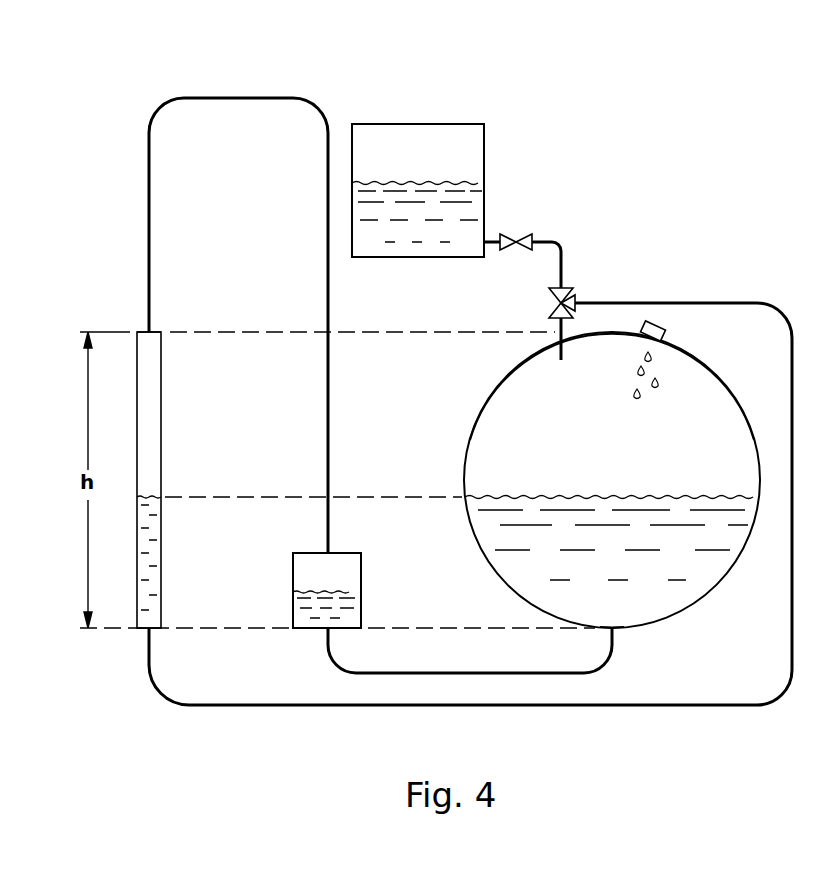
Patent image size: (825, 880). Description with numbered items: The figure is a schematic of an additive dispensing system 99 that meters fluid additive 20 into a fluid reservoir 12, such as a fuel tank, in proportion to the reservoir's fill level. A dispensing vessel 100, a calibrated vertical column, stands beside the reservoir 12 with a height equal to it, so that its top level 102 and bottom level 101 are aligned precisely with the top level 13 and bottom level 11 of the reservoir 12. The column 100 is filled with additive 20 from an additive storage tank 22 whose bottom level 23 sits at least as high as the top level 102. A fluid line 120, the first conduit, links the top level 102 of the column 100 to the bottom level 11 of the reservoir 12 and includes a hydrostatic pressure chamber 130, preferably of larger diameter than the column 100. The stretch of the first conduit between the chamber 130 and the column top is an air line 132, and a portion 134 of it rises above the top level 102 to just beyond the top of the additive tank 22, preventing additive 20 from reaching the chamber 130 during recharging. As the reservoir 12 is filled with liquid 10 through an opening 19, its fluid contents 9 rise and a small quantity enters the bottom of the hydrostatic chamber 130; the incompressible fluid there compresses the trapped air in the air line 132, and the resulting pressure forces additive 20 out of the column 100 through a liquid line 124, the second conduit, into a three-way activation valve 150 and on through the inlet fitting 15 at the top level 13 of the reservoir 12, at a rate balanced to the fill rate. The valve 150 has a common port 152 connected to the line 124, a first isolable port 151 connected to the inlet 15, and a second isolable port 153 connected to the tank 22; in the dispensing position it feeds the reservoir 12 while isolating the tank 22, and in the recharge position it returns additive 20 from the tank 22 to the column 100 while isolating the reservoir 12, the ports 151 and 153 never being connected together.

The additive dispensing system 99 is at (124, 88).
The portion of the air pressure line 134 is at (241, 98).
The air line 132 is at (328, 248).
The liquid line (second conduit) 124 is at (285, 705).
The fluid line (first conduit) 120 is at (328, 437).
The dispensing vessel (calibrated vertical column) 100 is at (161, 400).
The top level of the vertical column 102 is at (148, 332).
The bottom level of the vertical column 101 is at (148, 635).
The fluid additive 20 is at (155, 562).
The additive storage tank 22 is at (484, 140).
The bottom level of the additive storage tank 23 is at (430, 257).
The three-way activation valve 150 is at (572, 278).
The first isolable port 151 is at (553, 312).
The common port 152 is at (577, 303).
The second isolable port 153 is at (555, 295).
The inlet fitting (injection line) 15 is at (565, 355).
The fluid reservoir 12 is at (720, 590).
The top level of the reservoir 13 is at (612, 332).
The fluid contents 9 is at (650, 575).
The bottom level of the reservoir 11 is at (615, 635).
The opening 19 is at (668, 335).
The liquid 10 is at (630, 390).
The hydrostatic pressure chamber 130 is at (293, 580).